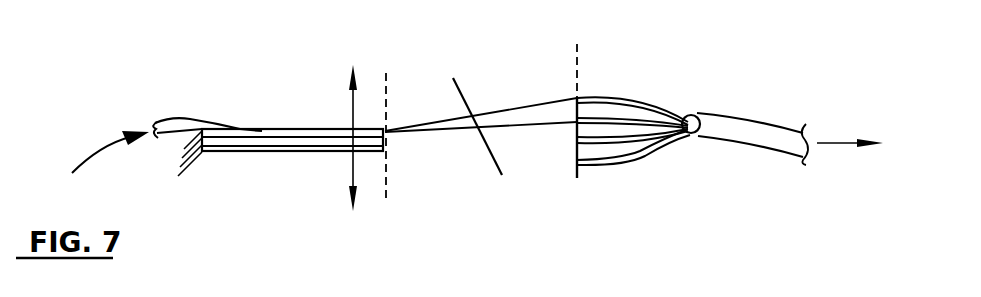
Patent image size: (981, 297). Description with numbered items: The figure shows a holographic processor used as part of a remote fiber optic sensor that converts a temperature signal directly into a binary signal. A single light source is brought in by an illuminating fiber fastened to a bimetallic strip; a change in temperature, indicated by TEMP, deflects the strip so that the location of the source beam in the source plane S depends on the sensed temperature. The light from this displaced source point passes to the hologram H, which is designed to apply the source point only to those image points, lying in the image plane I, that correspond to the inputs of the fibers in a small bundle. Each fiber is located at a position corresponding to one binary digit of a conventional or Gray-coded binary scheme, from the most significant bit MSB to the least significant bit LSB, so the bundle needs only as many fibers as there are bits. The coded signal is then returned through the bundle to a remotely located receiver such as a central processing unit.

The temperature-sensitive bimetallic strip (temperature input) TEMP is at (252, 158).
The source / strip plane with displacement direction S is at (370, 133).
The hologram H is at (475, 116).
The image plane I is at (575, 103).
The most significant bit optical fiber pair MSB is at (632, 99).
The least significant bit optical fiber pair LSB is at (633, 163).